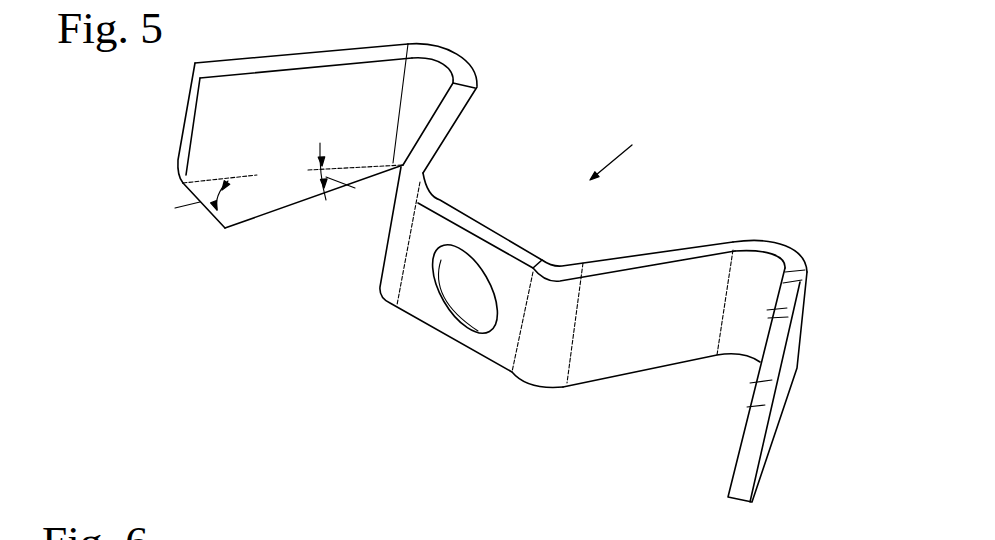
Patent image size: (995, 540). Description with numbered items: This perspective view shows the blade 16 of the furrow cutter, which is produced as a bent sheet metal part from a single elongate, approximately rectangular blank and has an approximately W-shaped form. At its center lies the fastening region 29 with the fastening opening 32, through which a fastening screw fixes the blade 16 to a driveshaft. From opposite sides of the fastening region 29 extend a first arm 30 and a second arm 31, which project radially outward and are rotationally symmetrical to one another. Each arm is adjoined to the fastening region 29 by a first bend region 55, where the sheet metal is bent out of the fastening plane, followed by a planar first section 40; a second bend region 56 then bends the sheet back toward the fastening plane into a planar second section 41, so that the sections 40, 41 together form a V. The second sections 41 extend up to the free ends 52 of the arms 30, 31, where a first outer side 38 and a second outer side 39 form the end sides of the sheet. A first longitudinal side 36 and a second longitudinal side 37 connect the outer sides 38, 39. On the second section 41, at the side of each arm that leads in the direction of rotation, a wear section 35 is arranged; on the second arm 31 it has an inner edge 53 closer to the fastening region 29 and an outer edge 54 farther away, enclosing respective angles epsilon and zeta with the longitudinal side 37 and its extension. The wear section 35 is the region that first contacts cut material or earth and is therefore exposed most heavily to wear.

The blade 16 is at (489, 270).
The fastening region 29 is at (442, 312).
The first arm 30 is at (646, 350).
The second arm 31 is at (277, 243).
The fastening opening 32 is at (448, 293).
The wear section 35 is at (242, 203).
The first longitudinal side 36 is at (637, 262).
The second longitudinal side 37 is at (675, 368).
The first outer side 38 is at (752, 445).
The second outer side 39 is at (183, 124).
The first section 40 is at (447, 160).
The second section 41 is at (489, 256).
The free end 52 is at (197, 50).
The inner edge 53 is at (283, 208).
The outer edge 54 is at (204, 210).
The first bend region 55 is at (372, 303).
The second bend region 56 is at (478, 50).